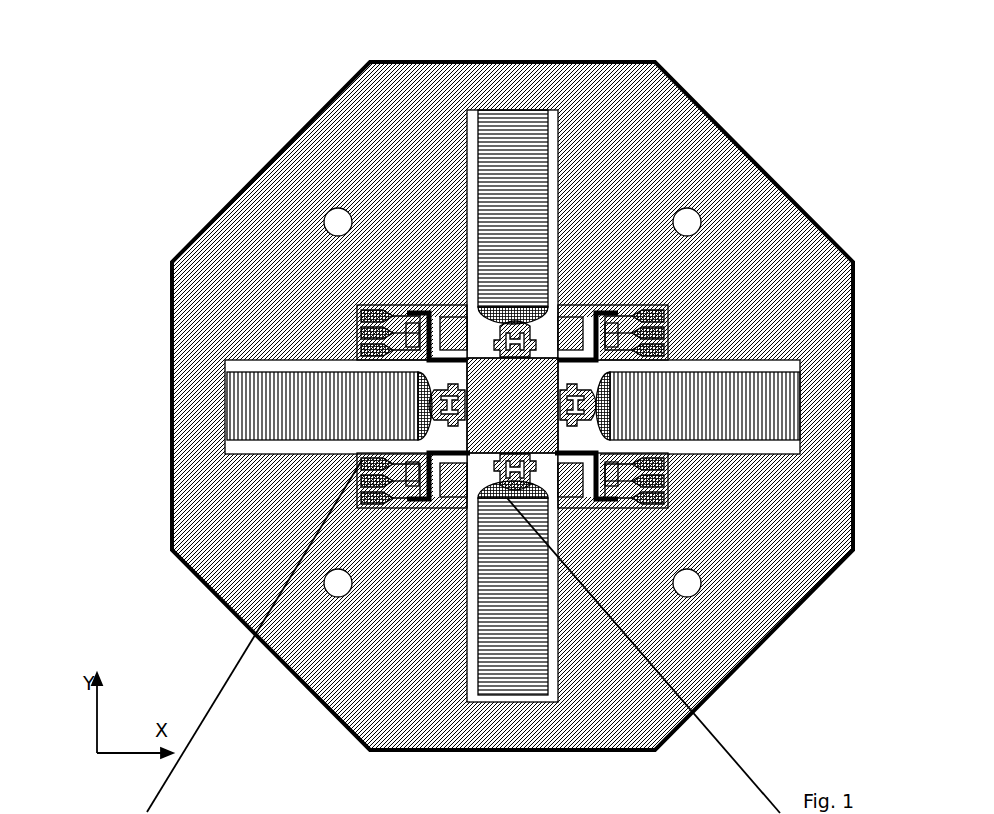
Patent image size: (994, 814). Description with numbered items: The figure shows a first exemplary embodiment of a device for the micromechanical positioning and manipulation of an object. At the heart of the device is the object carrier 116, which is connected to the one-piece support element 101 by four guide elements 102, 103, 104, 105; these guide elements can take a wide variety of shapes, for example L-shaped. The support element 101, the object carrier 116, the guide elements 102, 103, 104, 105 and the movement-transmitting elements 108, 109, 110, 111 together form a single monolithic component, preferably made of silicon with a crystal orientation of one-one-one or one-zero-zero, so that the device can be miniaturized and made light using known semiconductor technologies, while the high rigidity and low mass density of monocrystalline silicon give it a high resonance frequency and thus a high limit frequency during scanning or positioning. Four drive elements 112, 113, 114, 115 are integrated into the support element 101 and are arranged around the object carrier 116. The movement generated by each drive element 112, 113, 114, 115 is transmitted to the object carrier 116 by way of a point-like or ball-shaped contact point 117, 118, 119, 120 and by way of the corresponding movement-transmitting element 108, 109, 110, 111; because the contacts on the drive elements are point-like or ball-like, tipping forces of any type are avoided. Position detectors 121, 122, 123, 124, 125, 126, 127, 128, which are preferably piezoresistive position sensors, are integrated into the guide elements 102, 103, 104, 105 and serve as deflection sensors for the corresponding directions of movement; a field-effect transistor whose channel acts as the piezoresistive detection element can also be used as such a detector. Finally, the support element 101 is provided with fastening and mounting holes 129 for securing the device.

The support element 101 is at (613, 124).
The guide element 102 is at (620, 340).
The guide element 103 is at (643, 497).
The guide element 104 is at (430, 498).
The guide element 105 is at (417, 338).
The element for transmitting movement 108 is at (523, 330).
The element for transmitting movement 109 is at (582, 387).
The element for transmitting movement 110 is at (507, 498).
The element for transmitting movement 111 is at (437, 415).
The drive element 112 is at (497, 150).
The drive element 113 is at (720, 415).
The drive element 114 is at (500, 657).
The drive element 115 is at (258, 402).
The object carrier 116 is at (535, 417).
The contact point 117 is at (515, 312).
The contact point 118 is at (605, 408).
The contact point 119 is at (495, 506).
The contact point 120 is at (425, 402).
The position detector 121 is at (660, 316).
The position detector 122 is at (600, 493).
The position detector 123 is at (500, 483).
The position detector 124 is at (407, 313).
The position detector 125 is at (563, 357).
The position detector 126 is at (578, 458).
The position detector 127 is at (360, 505).
The position detector 128 is at (333, 228).
The fastening and mounting holes 129 is at (328, 218).